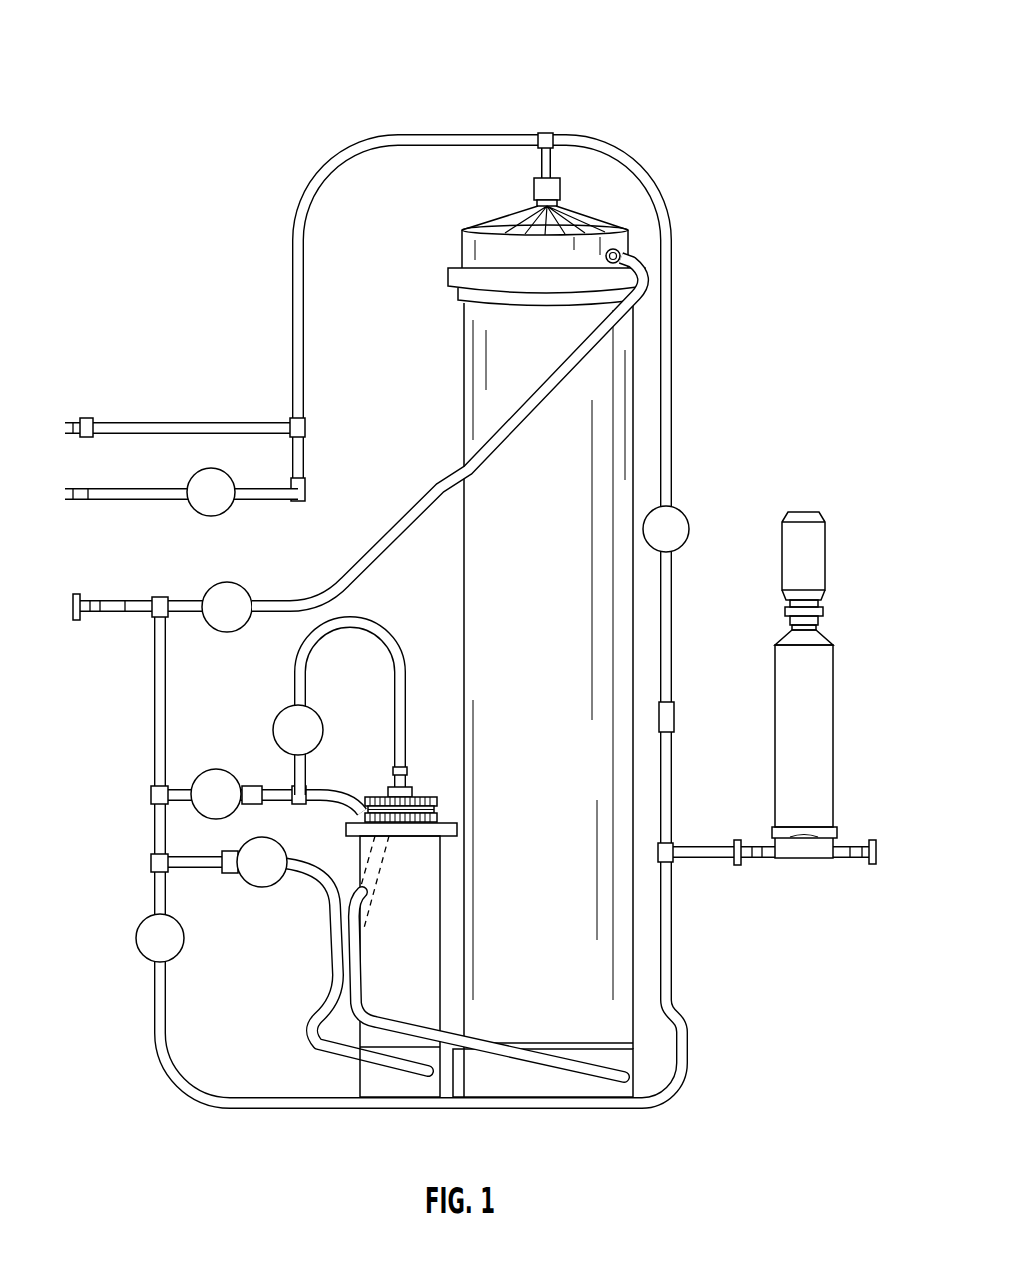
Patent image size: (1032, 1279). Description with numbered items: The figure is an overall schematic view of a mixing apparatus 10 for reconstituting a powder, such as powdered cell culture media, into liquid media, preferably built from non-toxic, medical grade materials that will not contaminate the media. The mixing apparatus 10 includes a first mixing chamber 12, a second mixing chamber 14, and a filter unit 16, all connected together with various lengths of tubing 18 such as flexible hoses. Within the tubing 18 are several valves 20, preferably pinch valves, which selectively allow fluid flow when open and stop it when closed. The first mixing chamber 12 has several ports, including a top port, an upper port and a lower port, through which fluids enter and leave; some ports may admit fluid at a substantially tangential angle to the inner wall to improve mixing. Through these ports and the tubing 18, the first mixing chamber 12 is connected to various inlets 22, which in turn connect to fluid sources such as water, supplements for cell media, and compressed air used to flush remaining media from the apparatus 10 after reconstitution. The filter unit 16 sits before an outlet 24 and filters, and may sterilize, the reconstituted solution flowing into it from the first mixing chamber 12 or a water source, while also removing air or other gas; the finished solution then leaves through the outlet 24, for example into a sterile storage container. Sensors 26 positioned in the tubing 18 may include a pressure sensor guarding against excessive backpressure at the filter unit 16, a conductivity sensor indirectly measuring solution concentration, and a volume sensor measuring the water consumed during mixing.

The mixing apparatus 10 is at (731, 58).
The first mixing chamber 12 is at (425, 314).
The second mixing chamber 14 is at (376, 772).
The filter unit 16 is at (782, 455).
The tubing 18 is at (662, 165).
The valves 20 is at (214, 516).
The inlets 22 is at (68, 428).
The outlet 24 is at (878, 852).
The sensors 26 is at (113, 603).